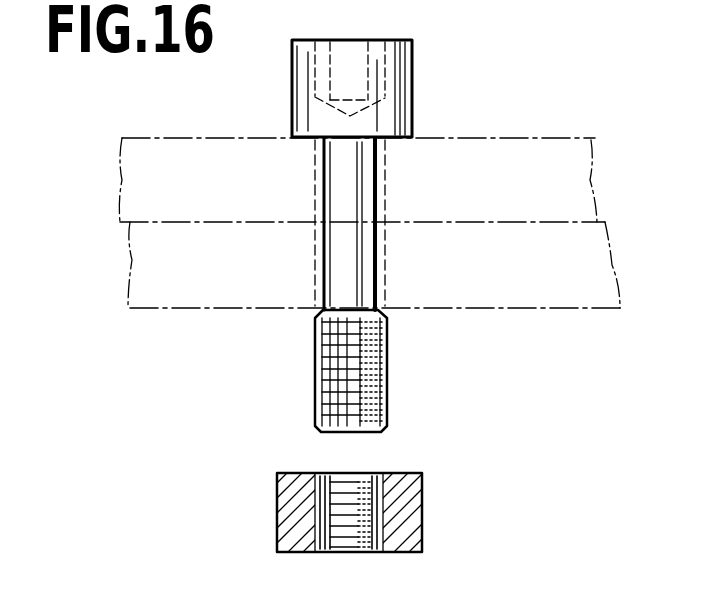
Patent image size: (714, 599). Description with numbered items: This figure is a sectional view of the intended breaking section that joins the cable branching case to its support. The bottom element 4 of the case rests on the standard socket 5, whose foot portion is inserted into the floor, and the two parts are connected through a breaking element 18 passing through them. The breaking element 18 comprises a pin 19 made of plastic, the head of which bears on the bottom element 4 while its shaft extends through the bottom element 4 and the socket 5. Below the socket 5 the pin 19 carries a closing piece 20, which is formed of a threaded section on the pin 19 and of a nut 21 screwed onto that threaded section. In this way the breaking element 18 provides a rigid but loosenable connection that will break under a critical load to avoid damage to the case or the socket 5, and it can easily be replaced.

The bottom element 4 is at (583, 166).
The socket 5 is at (572, 304).
The breaking element 18 is at (396, 90).
The pin 19 is at (380, 192).
The closing piece 20 is at (300, 482).
The nut 21 is at (292, 532).